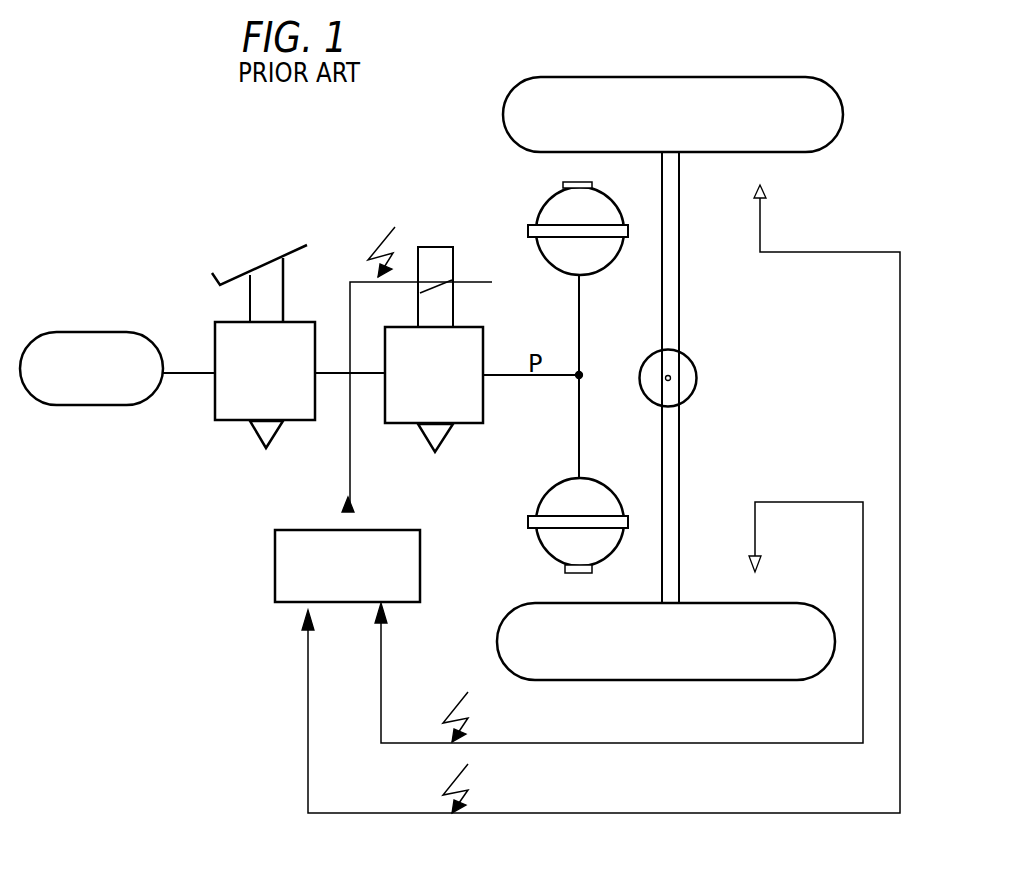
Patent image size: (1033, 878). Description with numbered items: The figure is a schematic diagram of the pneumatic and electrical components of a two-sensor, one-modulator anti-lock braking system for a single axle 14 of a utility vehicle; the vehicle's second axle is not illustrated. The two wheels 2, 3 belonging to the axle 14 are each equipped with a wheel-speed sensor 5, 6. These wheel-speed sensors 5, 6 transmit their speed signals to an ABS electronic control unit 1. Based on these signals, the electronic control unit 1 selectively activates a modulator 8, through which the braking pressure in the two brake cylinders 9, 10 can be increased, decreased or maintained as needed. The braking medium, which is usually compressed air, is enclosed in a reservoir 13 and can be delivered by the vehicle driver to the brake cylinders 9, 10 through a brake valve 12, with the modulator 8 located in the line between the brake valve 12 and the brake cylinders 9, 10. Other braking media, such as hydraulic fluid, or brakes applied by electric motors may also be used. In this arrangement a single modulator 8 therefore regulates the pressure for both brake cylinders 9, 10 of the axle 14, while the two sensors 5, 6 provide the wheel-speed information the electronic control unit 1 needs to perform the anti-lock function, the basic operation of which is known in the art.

The ABS electronic control unit 1 is at (275, 548).
The wheel 2 is at (833, 92).
The wheel 3 is at (785, 680).
The wheel-speed sensor 5 is at (764, 190).
The wheel-speed sensor 6 is at (757, 558).
The modulator 8 is at (468, 425).
The brake cylinder 9 is at (535, 220).
The brake cylinder 10 is at (530, 516).
The brake valve 12 is at (230, 421).
The reservoir 13 is at (102, 332).
The axle 14 is at (698, 375).